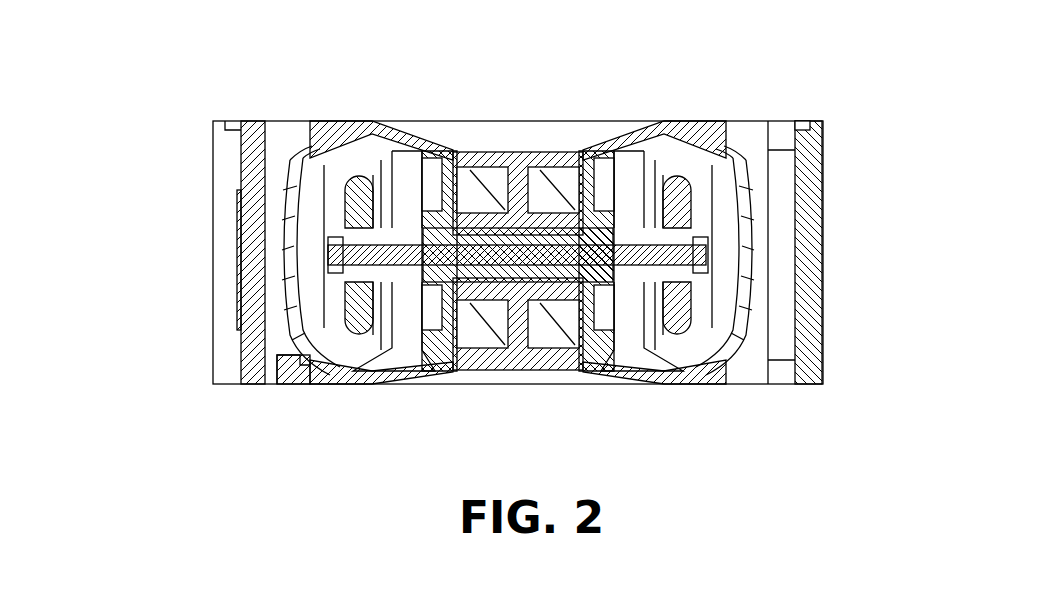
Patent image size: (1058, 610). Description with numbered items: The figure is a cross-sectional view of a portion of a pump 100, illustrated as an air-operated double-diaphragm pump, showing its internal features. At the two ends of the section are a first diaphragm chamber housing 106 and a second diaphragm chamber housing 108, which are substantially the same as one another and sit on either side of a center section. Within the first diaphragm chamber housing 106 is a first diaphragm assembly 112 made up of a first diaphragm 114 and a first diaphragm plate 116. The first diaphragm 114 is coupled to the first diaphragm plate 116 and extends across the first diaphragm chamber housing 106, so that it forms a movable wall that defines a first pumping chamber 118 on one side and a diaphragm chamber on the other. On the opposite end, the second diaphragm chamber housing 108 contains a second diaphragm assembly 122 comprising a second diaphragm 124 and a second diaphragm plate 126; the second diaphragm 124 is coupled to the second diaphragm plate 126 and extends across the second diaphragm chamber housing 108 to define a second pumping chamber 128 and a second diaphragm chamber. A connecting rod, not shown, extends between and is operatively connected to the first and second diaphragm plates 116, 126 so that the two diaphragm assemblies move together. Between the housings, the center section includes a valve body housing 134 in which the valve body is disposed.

The pump 100 is at (696, 92).
The first diaphragm chamber housing 106 is at (252, 178).
The second diaphragm chamber housing 108 is at (795, 153).
The first diaphragm assembly 112 is at (325, 267).
The first diaphragm 114 is at (330, 372).
The first diaphragm plate 116 is at (350, 322).
The first pumping chamber 118 is at (308, 213).
The second diaphragm assembly 122 is at (712, 280).
The second diaphragm 124 is at (715, 345).
The second diaphragm plate 126 is at (692, 207).
The second pumping chamber 128 is at (764, 248).
The valve body housing 134 is at (492, 152).